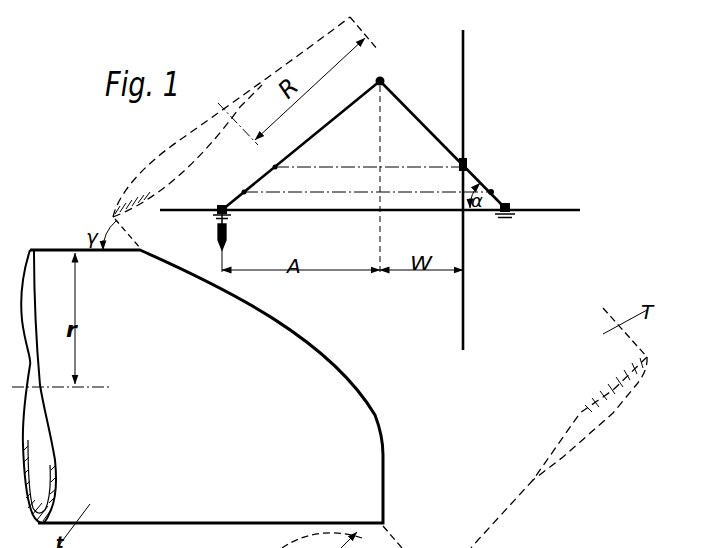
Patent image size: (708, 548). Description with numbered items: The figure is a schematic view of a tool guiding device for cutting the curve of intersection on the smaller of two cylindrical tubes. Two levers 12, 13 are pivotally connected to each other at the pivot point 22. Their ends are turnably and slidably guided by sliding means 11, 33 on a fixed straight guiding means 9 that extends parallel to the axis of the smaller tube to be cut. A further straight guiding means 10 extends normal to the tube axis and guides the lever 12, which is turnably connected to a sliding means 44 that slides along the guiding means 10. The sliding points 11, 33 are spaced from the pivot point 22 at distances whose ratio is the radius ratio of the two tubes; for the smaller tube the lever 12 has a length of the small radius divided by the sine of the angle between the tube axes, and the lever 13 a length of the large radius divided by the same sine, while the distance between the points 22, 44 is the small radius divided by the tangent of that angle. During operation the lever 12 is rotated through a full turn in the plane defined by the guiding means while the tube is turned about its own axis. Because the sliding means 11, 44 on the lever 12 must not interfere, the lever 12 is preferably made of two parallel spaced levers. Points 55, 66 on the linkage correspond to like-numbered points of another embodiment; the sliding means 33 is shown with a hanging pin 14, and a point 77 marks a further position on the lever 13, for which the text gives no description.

The fixed straight guiding means 9 is at (350, 212).
The further straight guiding means 10 is at (465, 62).
The sliding means 11 is at (511, 207).
The lever 12 is at (421, 121).
The lever 13 is at (334, 119).
The pin 14 is at (216, 235).
The pivot point 22 is at (382, 78).
The sliding means 33 is at (221, 207).
The sliding means 44 is at (466, 163).
The point 55 is at (243, 190).
The point 66 is at (493, 190).
The point 77 is at (275, 165).